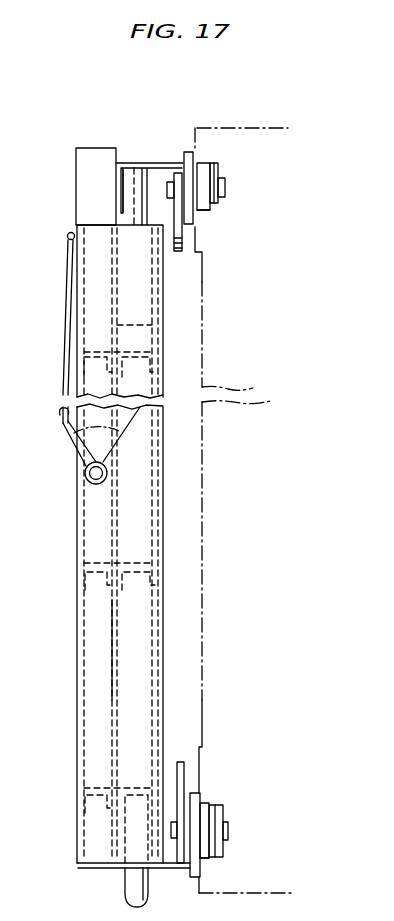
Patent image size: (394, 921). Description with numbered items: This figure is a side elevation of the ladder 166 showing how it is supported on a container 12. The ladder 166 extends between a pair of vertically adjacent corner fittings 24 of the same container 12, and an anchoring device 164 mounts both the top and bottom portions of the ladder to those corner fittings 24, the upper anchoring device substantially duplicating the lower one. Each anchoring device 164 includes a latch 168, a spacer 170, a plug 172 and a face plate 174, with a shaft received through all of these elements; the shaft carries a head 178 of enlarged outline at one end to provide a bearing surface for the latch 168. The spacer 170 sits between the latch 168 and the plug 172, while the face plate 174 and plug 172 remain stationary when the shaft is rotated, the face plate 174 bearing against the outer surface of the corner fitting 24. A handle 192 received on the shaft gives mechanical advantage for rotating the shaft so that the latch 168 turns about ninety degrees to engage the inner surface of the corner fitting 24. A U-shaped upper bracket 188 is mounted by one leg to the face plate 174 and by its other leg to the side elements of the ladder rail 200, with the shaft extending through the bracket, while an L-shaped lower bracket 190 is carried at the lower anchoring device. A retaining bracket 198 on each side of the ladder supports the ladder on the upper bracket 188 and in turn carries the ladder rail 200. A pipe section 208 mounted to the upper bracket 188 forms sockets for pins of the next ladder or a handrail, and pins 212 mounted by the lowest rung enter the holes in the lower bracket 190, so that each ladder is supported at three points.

The container 12 is at (267, 130).
The corner fitting 24 is at (196, 240).
The anchoring device 164 is at (125, 146).
The ladder 166 is at (77, 727).
The latch 168 is at (216, 168).
The spacer 170 is at (210, 212).
The plug 172 is at (200, 170).
The face plate 174 is at (188, 150).
The head 178 is at (224, 188).
The upper bracket 188 is at (142, 163).
The lower bracket 190 is at (112, 866).
The handle 192 is at (178, 252).
The retaining bracket 198 is at (138, 698).
The ladder rail 200 is at (80, 167).
The pipe section 208 is at (123, 195).
The pin 212 is at (125, 895).